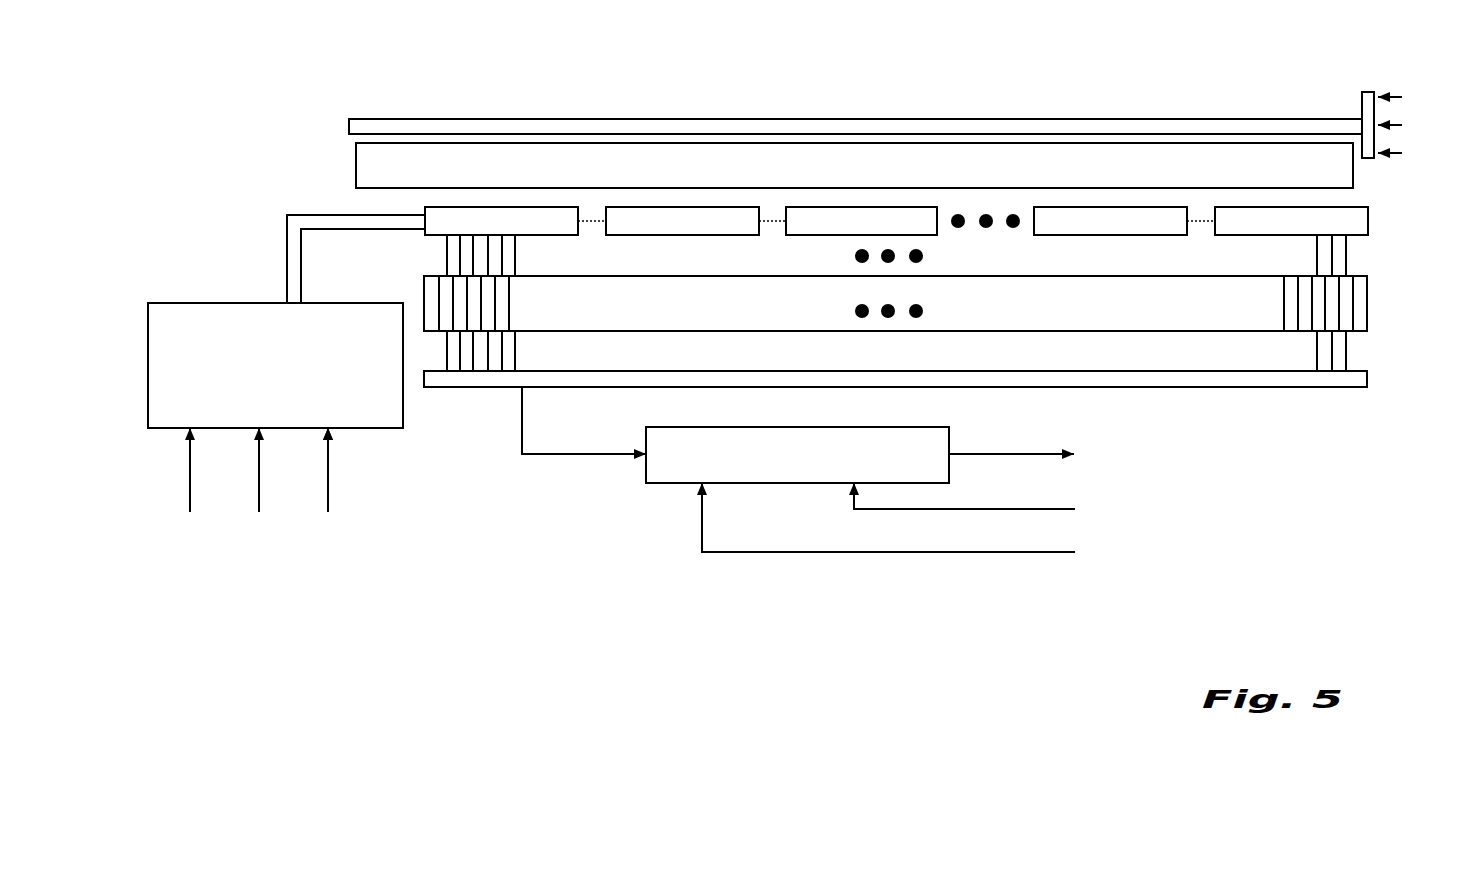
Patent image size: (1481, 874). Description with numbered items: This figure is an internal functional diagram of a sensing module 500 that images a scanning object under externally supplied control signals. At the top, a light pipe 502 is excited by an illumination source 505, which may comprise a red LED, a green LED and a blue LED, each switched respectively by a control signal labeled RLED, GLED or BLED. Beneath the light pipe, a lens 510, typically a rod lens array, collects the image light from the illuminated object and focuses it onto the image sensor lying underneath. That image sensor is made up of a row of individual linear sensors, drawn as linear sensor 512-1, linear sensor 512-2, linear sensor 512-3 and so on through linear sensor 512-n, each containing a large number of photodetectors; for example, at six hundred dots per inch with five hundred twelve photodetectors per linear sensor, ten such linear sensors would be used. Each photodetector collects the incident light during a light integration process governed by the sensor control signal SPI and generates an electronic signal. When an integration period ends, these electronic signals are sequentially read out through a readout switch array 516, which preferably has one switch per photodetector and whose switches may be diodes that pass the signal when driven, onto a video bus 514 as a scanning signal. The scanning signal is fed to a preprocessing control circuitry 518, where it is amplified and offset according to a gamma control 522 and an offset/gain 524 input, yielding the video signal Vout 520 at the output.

The sensing module 500 is at (786, 70).
The light pipe 502 is at (530, 124).
The illumination source 505 is at (1366, 100).
The lens 510 is at (360, 173).
The linear sensor 512-1 is at (501, 219).
The linear sensor 512-2 is at (682, 219).
The linear sensor 512-3 is at (861, 219).
The linear sensor 512-n is at (1291, 219).
The video bus 514 is at (1370, 376).
The readout switch array 516 is at (1370, 305).
The preprocessing control circuitry 518 is at (950, 438).
The video signal Vout 520 is at (1155, 452).
The gamma control 522 is at (1205, 546).
The offset/gain 524 is at (1235, 500).